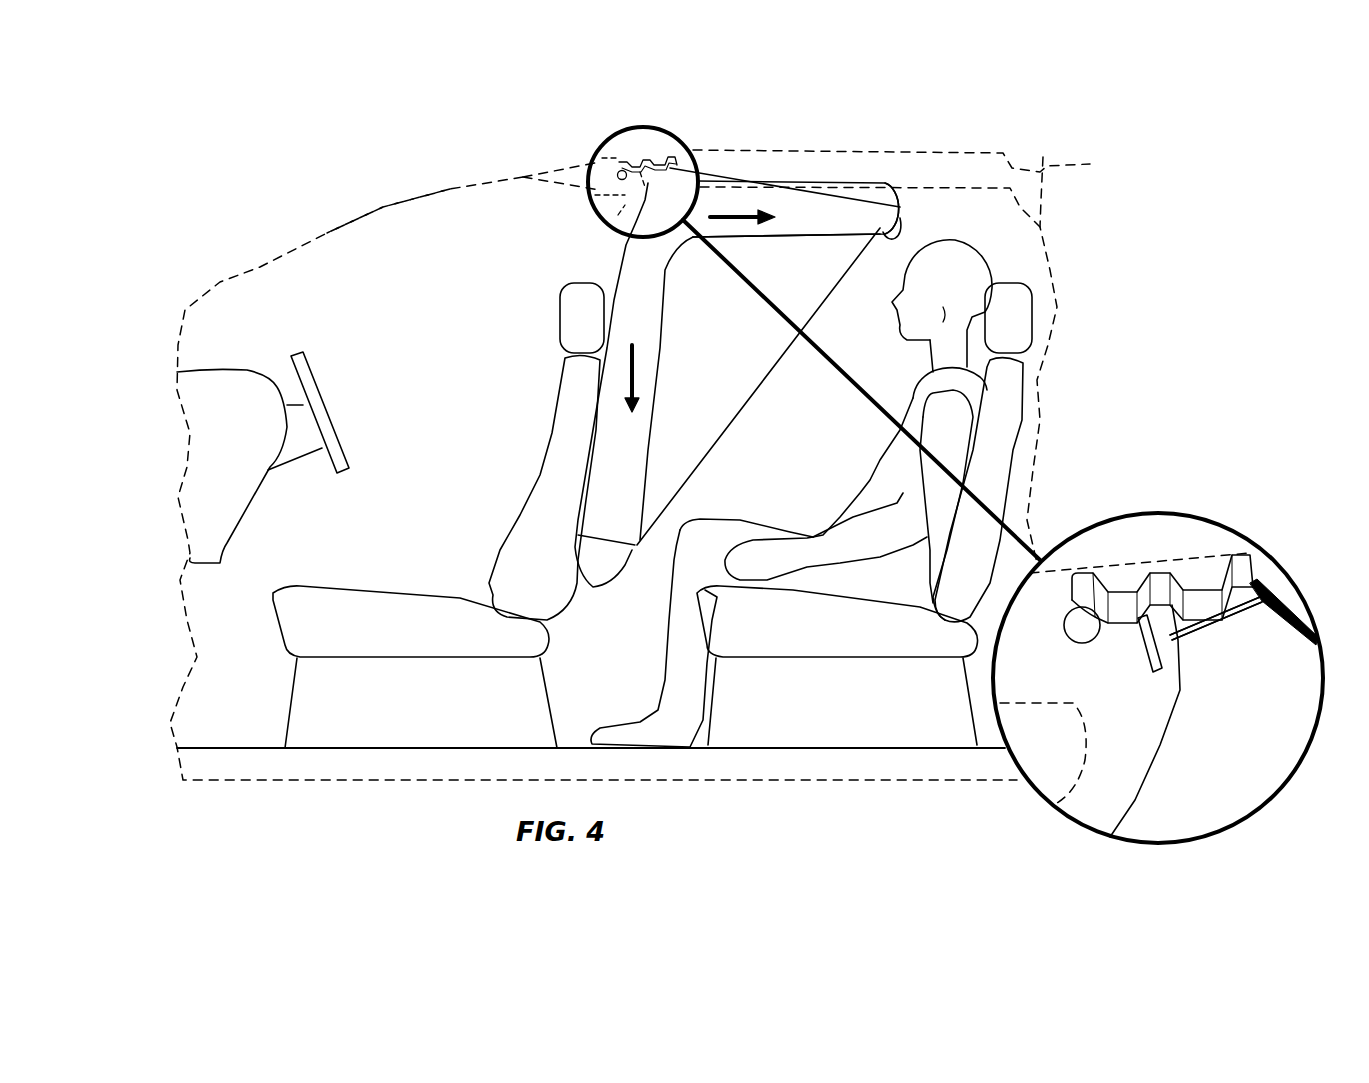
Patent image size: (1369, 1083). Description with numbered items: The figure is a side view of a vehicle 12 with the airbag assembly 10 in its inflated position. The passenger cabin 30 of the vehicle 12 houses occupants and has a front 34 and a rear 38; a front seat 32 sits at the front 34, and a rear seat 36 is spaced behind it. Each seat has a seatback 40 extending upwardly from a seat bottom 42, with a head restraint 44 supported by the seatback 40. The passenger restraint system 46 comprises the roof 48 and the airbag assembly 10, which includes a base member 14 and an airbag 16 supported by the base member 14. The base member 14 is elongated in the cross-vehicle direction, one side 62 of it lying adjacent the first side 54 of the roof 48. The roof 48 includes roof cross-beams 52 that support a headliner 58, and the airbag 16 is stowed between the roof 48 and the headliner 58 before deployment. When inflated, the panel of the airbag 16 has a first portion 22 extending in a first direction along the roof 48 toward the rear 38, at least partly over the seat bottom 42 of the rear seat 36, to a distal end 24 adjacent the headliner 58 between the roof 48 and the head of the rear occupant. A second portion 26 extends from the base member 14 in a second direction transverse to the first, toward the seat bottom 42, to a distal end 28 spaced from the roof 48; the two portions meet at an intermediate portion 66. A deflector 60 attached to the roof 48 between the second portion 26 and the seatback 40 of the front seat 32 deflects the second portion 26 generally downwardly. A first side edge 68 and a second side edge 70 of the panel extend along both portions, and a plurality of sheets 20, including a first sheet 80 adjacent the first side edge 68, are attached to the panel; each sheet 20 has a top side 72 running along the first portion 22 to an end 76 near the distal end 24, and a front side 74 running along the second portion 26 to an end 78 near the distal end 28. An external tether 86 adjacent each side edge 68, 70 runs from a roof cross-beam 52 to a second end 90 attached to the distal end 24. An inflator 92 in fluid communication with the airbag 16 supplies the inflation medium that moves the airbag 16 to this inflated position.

The airbag assembly 10 is at (1283, 610).
The vehicle 12 is at (230, 277).
The base member 14 is at (1228, 628).
The airbag 16 is at (1145, 777).
The sheets 20 is at (740, 425).
The first portion 22 is at (878, 193).
The distal end of the first portion 24 is at (900, 218).
The second portion 26 is at (602, 560).
The distal end of the second portion 28 is at (628, 557).
The passenger cabin 30 is at (440, 270).
The front seat 32 is at (412, 442).
The front of the passenger cabin 34 is at (262, 318).
The rear seat 36 is at (1035, 398).
The rear of the passenger cabin 38 is at (1012, 222).
The seatback 40 is at (527, 493).
The seat bottom 42 is at (410, 590).
The head restraint 44 is at (560, 318).
The passenger restraint system 46 is at (607, 118).
The roof 48 is at (1075, 164).
The roof cross-beam 52 is at (1160, 573).
The first side of the roof 54 is at (323, 238).
The headliner 58 is at (1047, 220).
The deflector 60 is at (1150, 647).
The side of the base member 62 is at (1200, 637).
The intermediate portion 66 is at (680, 250).
The first side edge 68 is at (841, 218).
The second side edge 70 is at (642, 465).
The top side 72 is at (810, 233).
The front side 74 is at (655, 402).
The end of the top side 76 is at (880, 233).
The end of the front side 78 is at (637, 545).
The first sheet 80 is at (770, 377).
The external tether 86 is at (1266, 595).
The second end of the external tether 90 is at (900, 207).
The inflator 92 is at (1070, 640).